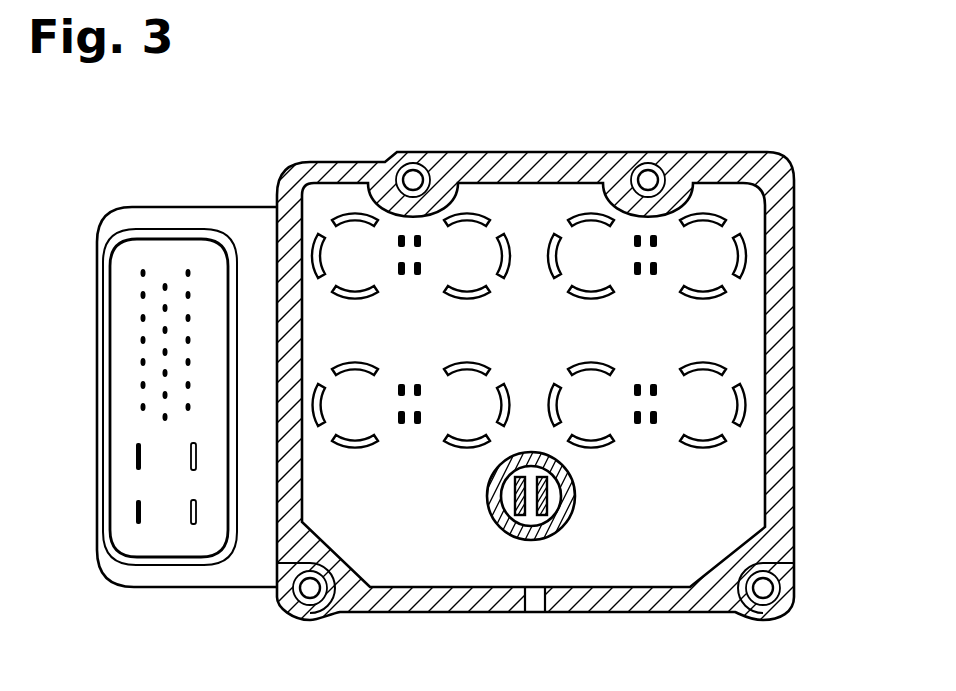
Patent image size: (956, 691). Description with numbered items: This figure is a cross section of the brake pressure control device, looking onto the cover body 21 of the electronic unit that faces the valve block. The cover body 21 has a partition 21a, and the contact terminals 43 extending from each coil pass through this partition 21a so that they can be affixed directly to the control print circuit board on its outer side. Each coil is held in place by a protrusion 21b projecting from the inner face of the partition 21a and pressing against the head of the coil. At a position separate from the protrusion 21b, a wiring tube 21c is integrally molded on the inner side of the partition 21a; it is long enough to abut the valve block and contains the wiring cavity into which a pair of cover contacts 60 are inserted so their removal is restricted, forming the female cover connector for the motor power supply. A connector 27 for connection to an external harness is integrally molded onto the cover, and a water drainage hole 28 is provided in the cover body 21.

The cover body 21 is at (788, 194).
The partition 21a is at (746, 340).
The protrusion 21b is at (722, 306).
The wiring tube 21c is at (567, 527).
The connector 27 is at (170, 236).
The water drainage hole 28 is at (537, 613).
The contact terminals 43 is at (424, 392).
The cover contacts 60 is at (545, 493).